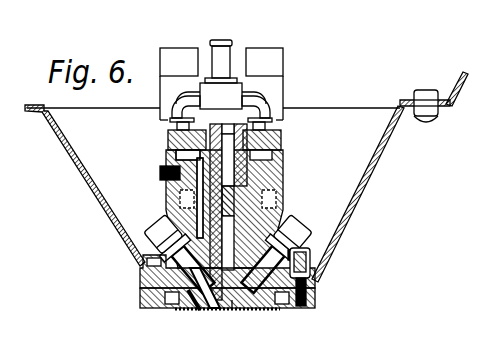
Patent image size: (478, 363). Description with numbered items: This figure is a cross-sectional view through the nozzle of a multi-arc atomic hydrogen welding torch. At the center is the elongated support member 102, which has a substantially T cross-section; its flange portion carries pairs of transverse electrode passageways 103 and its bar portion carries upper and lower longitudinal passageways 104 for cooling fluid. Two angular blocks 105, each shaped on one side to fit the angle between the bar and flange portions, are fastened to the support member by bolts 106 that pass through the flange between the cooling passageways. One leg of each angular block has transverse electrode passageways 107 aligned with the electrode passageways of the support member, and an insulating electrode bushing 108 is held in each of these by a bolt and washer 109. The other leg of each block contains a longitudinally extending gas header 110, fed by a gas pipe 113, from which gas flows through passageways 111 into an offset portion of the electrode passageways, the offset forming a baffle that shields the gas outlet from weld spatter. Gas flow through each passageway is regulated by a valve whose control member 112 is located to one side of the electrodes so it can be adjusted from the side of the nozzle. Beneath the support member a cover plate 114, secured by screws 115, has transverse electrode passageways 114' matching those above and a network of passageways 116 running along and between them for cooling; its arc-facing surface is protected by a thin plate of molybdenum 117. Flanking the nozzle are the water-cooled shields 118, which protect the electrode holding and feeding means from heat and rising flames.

The support member 102 is at (316, 270).
The transverse electrode passageways 103 is at (203, 288).
The longitudinal passageways for cooling fluid 104 is at (286, 160).
The angular blocks 105 is at (168, 135).
The bolts 106 is at (266, 200).
The transverse electrode passageways 107 is at (142, 268).
The insulating electrode bushing 108 is at (162, 234).
The bolt and washer 109 is at (296, 238).
The gas header 110 is at (198, 158).
The passageways 111 is at (196, 190).
The control member 112 is at (160, 172).
The gas pipes 113 is at (240, 50).
The cover plate 114 is at (335, 294).
The transverse electrode passageways 114' is at (199, 314).
The screws 115 is at (312, 262).
The network of passageways 116 is at (140, 300).
The plate of molybdenum 117 is at (234, 310).
The water-cooled shields 118 is at (370, 160).